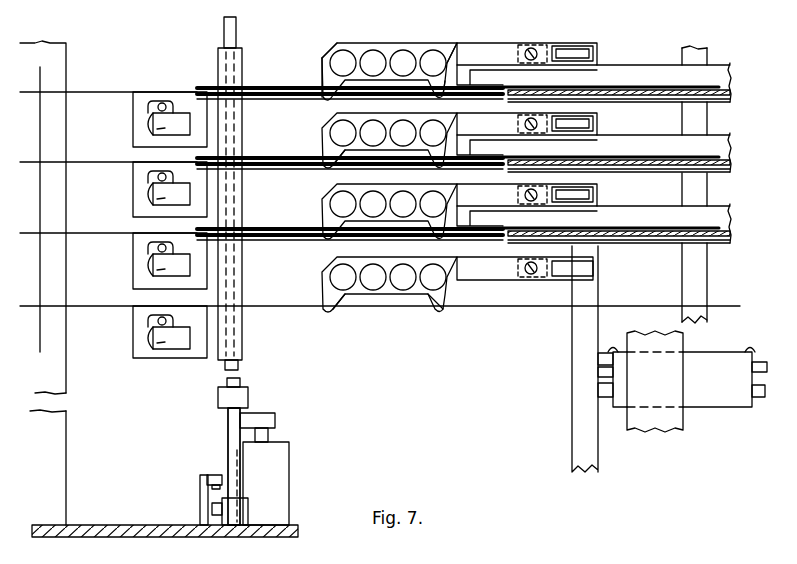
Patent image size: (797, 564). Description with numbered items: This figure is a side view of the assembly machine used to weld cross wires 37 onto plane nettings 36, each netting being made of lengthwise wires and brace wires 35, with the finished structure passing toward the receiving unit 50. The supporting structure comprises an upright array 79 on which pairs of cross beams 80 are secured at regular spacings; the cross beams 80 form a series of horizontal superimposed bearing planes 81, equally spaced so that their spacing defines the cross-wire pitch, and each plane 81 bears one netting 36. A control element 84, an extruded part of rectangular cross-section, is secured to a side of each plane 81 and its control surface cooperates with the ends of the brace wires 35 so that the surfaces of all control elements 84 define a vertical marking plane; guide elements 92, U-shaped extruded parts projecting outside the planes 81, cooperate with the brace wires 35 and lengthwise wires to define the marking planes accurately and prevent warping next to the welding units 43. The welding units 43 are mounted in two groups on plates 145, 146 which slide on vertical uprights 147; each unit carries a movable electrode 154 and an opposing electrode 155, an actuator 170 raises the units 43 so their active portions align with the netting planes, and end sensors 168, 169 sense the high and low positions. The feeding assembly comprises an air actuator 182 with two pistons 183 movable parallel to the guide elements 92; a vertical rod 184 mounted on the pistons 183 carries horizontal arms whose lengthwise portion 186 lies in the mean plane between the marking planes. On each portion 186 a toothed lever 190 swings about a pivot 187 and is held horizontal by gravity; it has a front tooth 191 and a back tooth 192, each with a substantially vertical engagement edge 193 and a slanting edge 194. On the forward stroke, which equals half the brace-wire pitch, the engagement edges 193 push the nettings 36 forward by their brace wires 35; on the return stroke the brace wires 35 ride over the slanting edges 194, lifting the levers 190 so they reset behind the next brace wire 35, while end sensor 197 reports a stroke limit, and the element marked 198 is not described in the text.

The brace wires 35 is at (100, 94).
The plane nettings 36 is at (733, 136).
The cross wires 37 is at (44, 205).
The welding units 43 is at (162, 84).
The receiving unit 50 is at (75, 84).
The upright array 79 is at (700, 58).
The cross beams 80 is at (697, 170).
The bearing planes 81 is at (622, 97).
The control element 84 is at (624, 82).
The guide elements 92 is at (250, 155).
The plate 145 is at (228, 423).
The plate 146 is at (234, 466).
The vertical uprights 147 is at (243, 348).
The movable electrode 154 is at (148, 107).
The opposing electrode 155 is at (150, 132).
The end sensor 168 is at (200, 478).
The end sensor 169 is at (213, 517).
The actuator 170 is at (285, 493).
The air actuator 182 is at (722, 397).
The pistons 183 is at (603, 388).
The vertical rod 184 is at (587, 355).
The lengthwise portion 186 is at (570, 267).
The pivot 187 is at (565, 56).
The toothed lever 190 is at (388, 47).
The front tooth 191 is at (332, 165).
The back tooth 192 is at (442, 303).
The engagement edge 193 is at (318, 60).
The slanting edge 194 is at (313, 88).
The end sensor 197 is at (628, 350).
The piston connector 198 is at (748, 350).